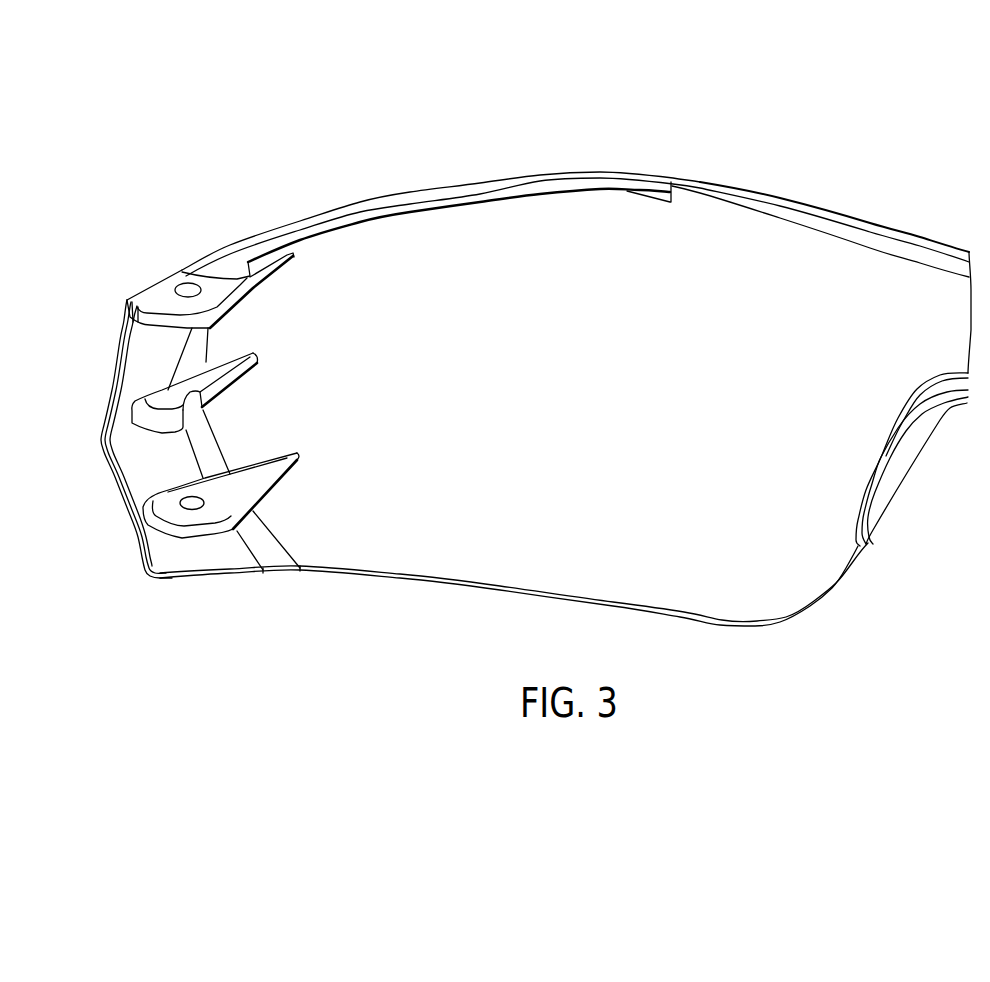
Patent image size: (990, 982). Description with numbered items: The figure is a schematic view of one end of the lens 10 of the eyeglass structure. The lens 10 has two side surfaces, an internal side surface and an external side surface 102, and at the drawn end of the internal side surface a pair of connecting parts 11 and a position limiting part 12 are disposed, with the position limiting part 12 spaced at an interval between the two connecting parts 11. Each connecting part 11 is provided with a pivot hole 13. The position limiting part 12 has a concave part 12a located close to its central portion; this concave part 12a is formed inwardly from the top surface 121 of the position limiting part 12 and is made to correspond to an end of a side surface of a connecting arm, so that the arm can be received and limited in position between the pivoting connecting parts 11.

The lens 10 is at (158, 79).
The external side surface 102 is at (622, 217).
The connecting parts 11 is at (253, 276).
The position limiting part 12 is at (160, 398).
The top surface 121 is at (241, 379).
The concave part 12a is at (212, 424).
The pivot hole 13 is at (180, 289).